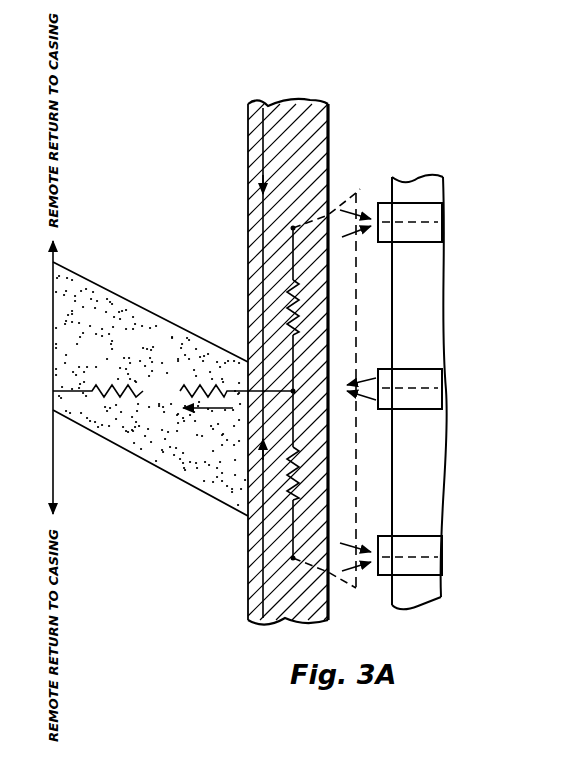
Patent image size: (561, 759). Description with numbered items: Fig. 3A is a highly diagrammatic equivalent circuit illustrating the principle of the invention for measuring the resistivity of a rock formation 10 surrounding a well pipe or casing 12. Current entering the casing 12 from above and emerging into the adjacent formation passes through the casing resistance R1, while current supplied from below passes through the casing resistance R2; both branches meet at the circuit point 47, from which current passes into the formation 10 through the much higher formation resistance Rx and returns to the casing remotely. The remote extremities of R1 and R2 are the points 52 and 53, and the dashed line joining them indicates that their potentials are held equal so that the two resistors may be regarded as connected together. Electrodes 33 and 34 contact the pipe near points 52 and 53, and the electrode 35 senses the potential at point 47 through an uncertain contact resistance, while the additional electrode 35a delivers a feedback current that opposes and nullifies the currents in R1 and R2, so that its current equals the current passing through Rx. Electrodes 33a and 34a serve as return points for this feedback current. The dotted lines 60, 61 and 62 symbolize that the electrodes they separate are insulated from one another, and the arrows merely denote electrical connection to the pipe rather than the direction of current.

The rock formation 10 is at (138, 355).
The tubing string 12 is at (328, 137).
The electrode 33 is at (444, 207).
The electrode 33a is at (436, 237).
The electrode 34 is at (445, 542).
The electrode 34a is at (436, 571).
The electrode 35 is at (440, 382).
The additional electrode 35a is at (438, 402).
The circuit point 47 is at (293, 391).
The point 52 is at (293, 228).
The point 53 is at (293, 558).
The dotted line 60 is at (420, 388).
The dotted line 61 is at (432, 223).
The dotted line 62 is at (432, 557).
The resistance R1 is at (297, 306).
The resistance R2 is at (297, 476).
The formation resistance Rx is at (150, 395).